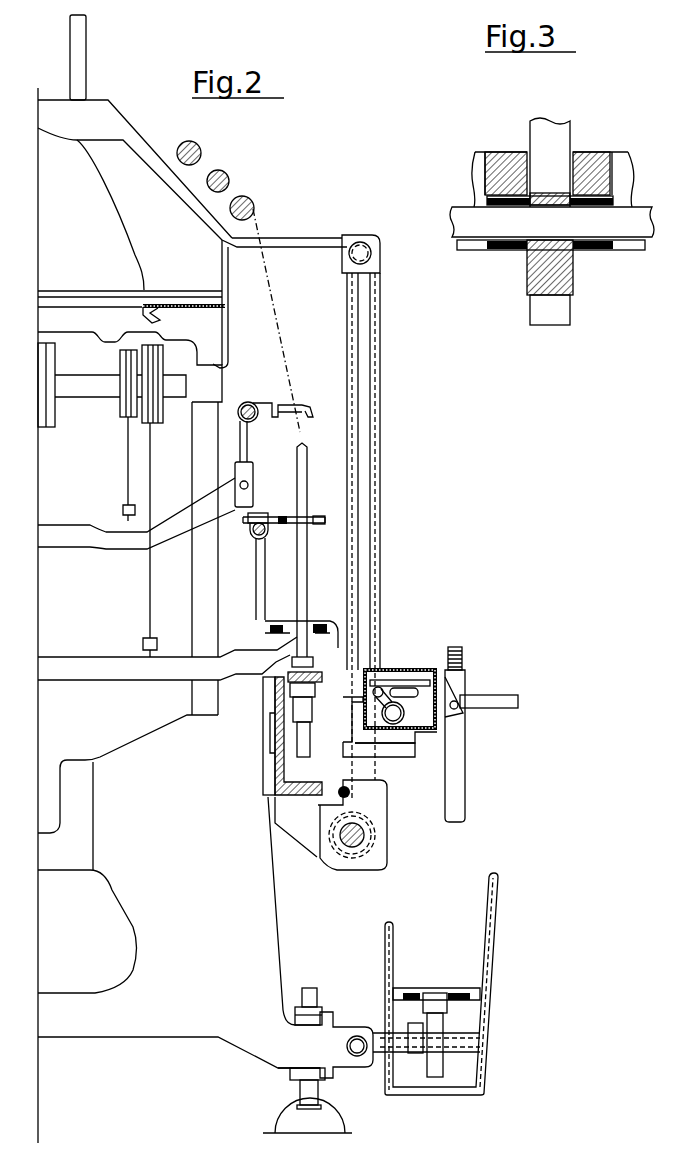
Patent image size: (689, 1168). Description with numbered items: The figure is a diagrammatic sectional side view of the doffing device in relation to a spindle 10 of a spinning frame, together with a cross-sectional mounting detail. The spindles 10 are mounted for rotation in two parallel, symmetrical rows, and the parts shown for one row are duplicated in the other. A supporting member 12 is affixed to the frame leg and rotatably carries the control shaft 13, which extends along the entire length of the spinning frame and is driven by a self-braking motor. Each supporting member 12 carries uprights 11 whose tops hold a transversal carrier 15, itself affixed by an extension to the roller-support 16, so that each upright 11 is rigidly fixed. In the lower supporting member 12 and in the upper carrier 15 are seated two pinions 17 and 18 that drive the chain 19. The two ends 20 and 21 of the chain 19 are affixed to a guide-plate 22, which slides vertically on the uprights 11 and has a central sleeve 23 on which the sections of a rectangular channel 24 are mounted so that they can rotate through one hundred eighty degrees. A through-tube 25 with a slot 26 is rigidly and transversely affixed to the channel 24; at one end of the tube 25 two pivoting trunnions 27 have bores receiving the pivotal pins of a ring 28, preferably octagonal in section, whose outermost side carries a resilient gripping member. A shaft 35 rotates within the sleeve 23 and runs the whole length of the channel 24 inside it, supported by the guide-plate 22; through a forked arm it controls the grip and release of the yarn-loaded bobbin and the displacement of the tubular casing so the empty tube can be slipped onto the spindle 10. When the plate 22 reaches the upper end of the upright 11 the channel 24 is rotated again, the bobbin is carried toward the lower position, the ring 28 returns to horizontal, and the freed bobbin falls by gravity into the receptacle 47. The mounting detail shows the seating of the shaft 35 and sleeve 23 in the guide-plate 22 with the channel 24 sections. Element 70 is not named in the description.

In FIG. 2, the spindle 10 is at (310, 484).
In FIG. 2, the upright 11 is at (383, 485).
In FIG. 3, the upright 11 is at (560, 327).
In FIG. 2, the supporting member 12 is at (378, 858).
In FIG. 2, the control shaft 13 is at (345, 853).
In FIG. 2, the transversal carrier 15 is at (343, 237).
In FIG. 2, the roller-support 16 is at (135, 222).
In FIG. 2, the pinion 17 is at (357, 858).
In FIG. 2, the pinion 18 is at (360, 245).
In FIG. 2, the chain 19 is at (382, 380).
In FIG. 2, the chain end 20 is at (352, 693).
In FIG. 2, the chain end 21 is at (348, 758).
In FIG. 2, the guide-plate 22 is at (402, 745).
In FIG. 3, the guide-plate 22 is at (574, 274).
In FIG. 3, the central sleeve 23 is at (507, 251).
In FIG. 2, the rectangular channel 24 is at (407, 668).
In FIG. 3, the rectangular channel 24 is at (497, 152).
In FIG. 2, the through-tube 25 is at (427, 683).
In FIG. 2, the slot 26 is at (415, 702).
In FIG. 2, the pivoting trunnion 27 is at (464, 713).
In FIG. 2, the ring 28 is at (493, 695).
In FIG. 3, the shaft 35 is at (473, 228).
In FIG. 2, the receptacle 47 is at (502, 905).
In FIG. 2, the guide block 70 is at (276, 743).